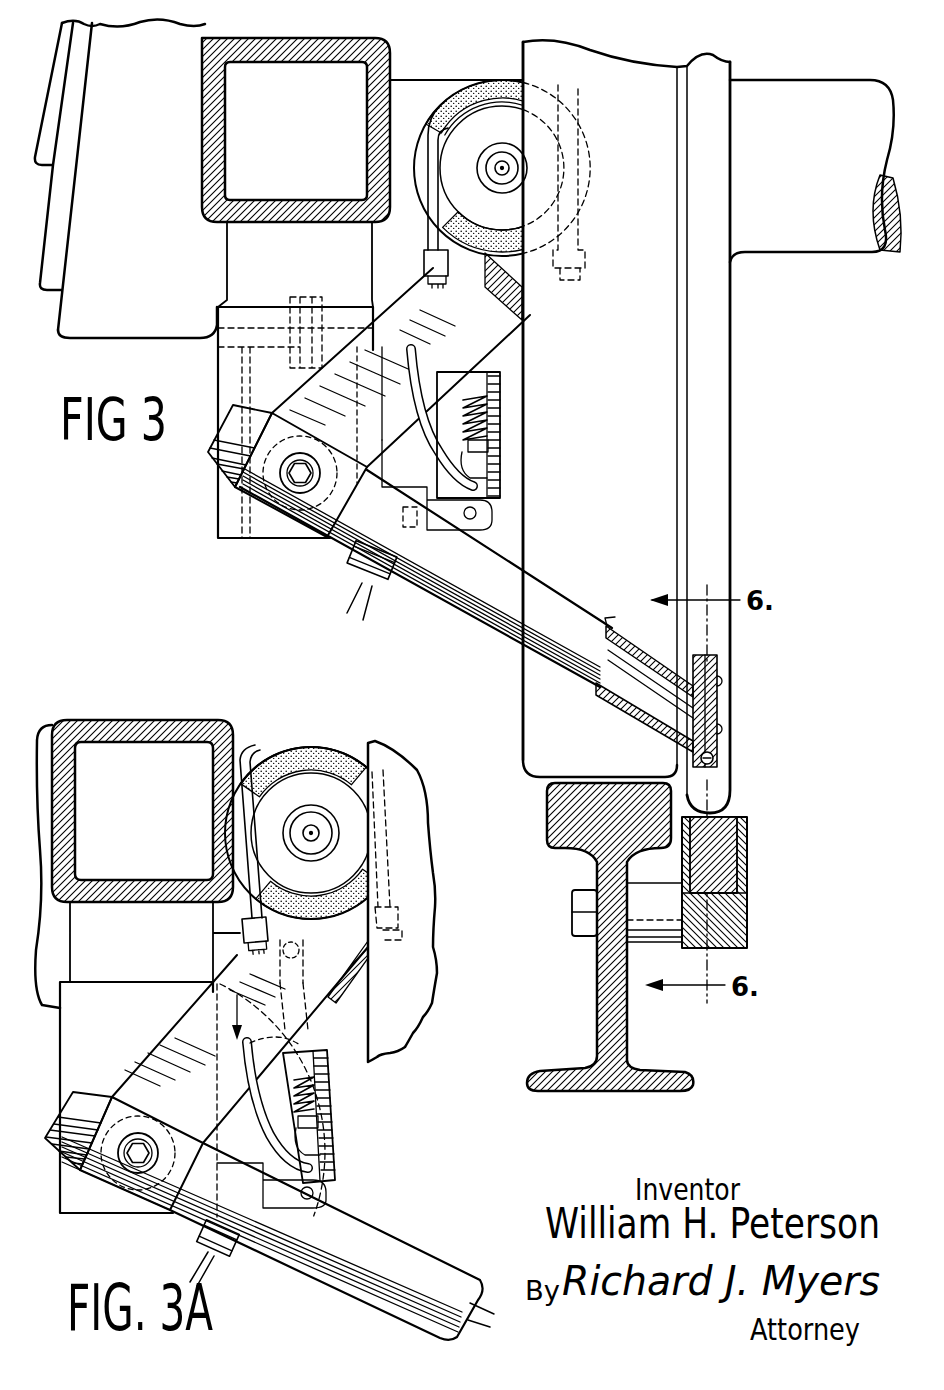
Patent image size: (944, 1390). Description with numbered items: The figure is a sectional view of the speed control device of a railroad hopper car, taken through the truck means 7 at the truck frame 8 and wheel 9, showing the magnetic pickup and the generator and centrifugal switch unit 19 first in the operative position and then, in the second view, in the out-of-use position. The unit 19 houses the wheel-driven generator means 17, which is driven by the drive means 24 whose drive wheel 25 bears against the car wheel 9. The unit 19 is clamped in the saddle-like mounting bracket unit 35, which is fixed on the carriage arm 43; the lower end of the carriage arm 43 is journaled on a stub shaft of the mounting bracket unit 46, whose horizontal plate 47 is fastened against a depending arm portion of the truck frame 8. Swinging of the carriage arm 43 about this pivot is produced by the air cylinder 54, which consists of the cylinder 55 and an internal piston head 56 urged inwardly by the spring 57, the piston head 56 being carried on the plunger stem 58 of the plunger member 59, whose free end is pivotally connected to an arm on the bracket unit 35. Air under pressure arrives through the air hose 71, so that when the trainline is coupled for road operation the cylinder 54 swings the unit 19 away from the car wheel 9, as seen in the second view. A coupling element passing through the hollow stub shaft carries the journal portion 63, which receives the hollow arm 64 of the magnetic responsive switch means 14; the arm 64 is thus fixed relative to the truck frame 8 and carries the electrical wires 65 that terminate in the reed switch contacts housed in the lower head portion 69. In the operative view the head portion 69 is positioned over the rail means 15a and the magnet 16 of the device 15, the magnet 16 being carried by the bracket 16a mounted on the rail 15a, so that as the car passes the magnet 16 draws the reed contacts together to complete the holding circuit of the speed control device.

In FIG. 3, the truck means 7 is at (740, 410).
In FIG. 3, the truck frame 8 is at (205, 75).
In FIG. 3A, the truck frame 8 is at (150, 720).
In FIG. 3, the wheels 9 is at (730, 338).
In FIG. 3A, the wheels 9 is at (393, 1000).
In FIG. 3, the magnetic responsive switch means 14 is at (600, 600).
In FIG. 3A, the magnetic responsive switch means 14 is at (445, 1250).
In FIG. 3, the device 15 is at (422, 592).
In FIG. 3, the rail means 15a is at (636, 1011).
In FIG. 3, the magnet 16 is at (733, 813).
In FIG. 3, the bracket 16a is at (747, 920).
In FIG. 3, the generator means 17 is at (430, 118).
In FIG. 3A, the generator means 17 is at (247, 760).
In FIG. 3, the generator centrifugal switch unit 19 is at (503, 70).
In FIG. 3A, the generator centrifugal switch unit 19 is at (344, 740).
In FIG. 3, the drive means 24 is at (465, 169).
In FIG. 3A, the drive means 24 is at (270, 825).
In FIG. 3, the drive wheel 25 is at (497, 145).
In FIG. 3A, the mounting bracket unit 35 is at (300, 745).
In FIG. 3, the carriage arm 43 is at (362, 350).
In FIG. 3A, the carriage arm 43 is at (187, 968).
In FIG. 3, the mounting bracket unit 46 is at (212, 363).
In FIG. 3A, the mounting bracket unit 46 is at (56, 1062).
In FIG. 3, the horizontal plate 47 is at (215, 415).
In FIG. 3A, the horizontal plate 47 is at (60, 1098).
In FIG. 3, the air cylinder 54 is at (508, 463).
In FIG. 3A, the air cylinder 54 is at (350, 1130).
In FIG. 3, the cylinder 55 is at (500, 385).
In FIG. 3A, the cylinder 55 is at (322, 1142).
In FIG. 3, the piston head 56 is at (500, 433).
In FIG. 3A, the piston head 56 is at (323, 1110).
In FIG. 3, the spring 57 is at (500, 403).
In FIG. 3A, the spring 57 is at (322, 1085).
In FIG. 3A, the plunger stem 58 is at (305, 1025).
In FIG. 3A, the plunger member 59 is at (310, 998).
In FIG. 3, the journal portion 63 is at (240, 482).
In FIG. 3A, the journal portion 63 is at (103, 1190).
In FIG. 3, the arm 64 is at (515, 570).
In FIG. 3A, the arm 64 is at (355, 1225).
In FIG. 3, the electrical wires 65 is at (350, 585).
In FIG. 3A, the electrical wires 65 is at (207, 1263).
In FIG. 3, the head portion 69 is at (718, 652).
In FIG. 3, the air hose 71 is at (420, 350).
In FIG. 3A, the air hose 71 is at (228, 1063).